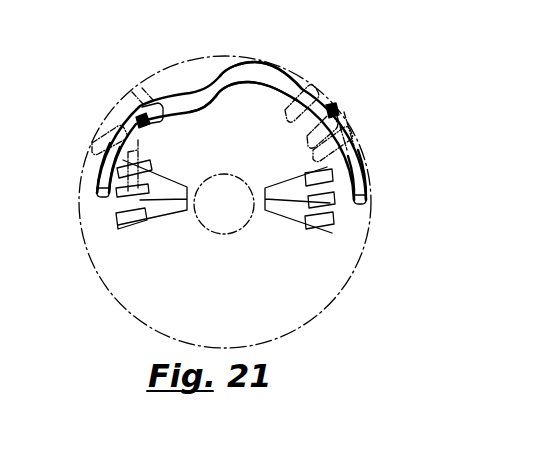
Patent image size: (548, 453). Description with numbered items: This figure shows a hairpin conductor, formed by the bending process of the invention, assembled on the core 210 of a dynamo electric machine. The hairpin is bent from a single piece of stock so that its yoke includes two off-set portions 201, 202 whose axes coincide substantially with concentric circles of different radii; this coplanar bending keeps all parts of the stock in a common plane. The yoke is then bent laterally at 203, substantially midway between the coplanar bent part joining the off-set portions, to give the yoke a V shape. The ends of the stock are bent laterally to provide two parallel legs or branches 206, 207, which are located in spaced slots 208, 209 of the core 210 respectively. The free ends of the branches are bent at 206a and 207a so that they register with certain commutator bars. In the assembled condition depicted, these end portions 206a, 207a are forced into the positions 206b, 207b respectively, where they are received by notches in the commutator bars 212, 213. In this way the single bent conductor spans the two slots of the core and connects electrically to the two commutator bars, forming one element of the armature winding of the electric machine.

The off-set portion 201 is at (172, 97).
The off-set portion 202 is at (257, 78).
The lateral bend of yoke 203 is at (222, 91).
The branch 206 is at (141, 124).
The bent end portion of branch 206a is at (100, 181).
The final position of bent end 206b is at (138, 156).
The branch 207 is at (331, 106).
The bent end portion of branch 207a is at (366, 190).
The final position of bent end 207b is at (325, 173).
The slot 208 is at (122, 113).
The slot 209 is at (313, 122).
The core 210 is at (268, 64).
The commutator bar 212 is at (110, 207).
The commutator bar 213 is at (333, 207).